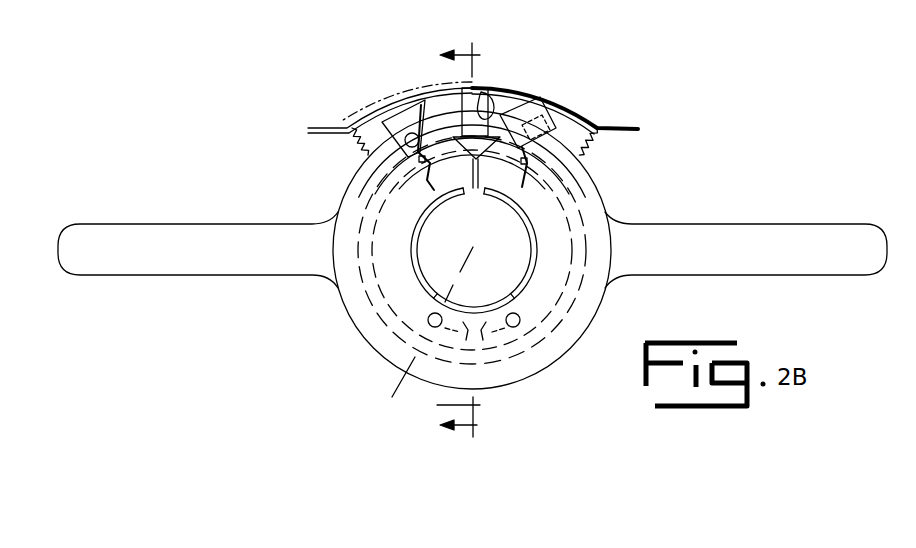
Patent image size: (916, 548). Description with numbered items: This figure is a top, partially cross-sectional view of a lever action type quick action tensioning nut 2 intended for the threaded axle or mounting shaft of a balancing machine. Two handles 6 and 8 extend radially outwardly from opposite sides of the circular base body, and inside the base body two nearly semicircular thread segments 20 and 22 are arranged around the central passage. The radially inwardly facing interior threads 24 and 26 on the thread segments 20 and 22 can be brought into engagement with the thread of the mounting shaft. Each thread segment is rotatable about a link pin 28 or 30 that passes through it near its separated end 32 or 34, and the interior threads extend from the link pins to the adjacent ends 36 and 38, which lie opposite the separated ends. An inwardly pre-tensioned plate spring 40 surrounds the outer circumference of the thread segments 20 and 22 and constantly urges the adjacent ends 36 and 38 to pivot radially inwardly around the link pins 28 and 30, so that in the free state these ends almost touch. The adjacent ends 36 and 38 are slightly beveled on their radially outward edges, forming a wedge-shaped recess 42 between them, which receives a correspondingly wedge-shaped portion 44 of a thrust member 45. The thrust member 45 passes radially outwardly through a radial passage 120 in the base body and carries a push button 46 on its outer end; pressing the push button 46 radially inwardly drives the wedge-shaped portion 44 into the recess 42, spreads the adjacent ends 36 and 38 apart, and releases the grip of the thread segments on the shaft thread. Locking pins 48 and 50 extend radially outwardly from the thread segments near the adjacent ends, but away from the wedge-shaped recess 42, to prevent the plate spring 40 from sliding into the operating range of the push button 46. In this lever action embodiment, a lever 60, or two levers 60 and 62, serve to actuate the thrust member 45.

The quick action tensioning nut 2 is at (322, 95).
The handle 6 is at (162, 233).
The handle 8 is at (783, 233).
The thread segment 20 is at (390, 288).
The thread segment 22 is at (590, 135).
The interior thread 24 is at (418, 225).
The interior thread 26 is at (527, 218).
The link pin 28 is at (429, 322).
The link pin 30 is at (519, 325).
The separated end 32 is at (448, 368).
The separated end 34 is at (528, 378).
The adjacent end 36 is at (425, 160).
The adjacent end 38 is at (593, 173).
The plate spring 40 is at (600, 312).
The wedge-shaped recess 42 is at (530, 120).
The wedge-shaped portion 44 is at (515, 118).
The thrust member 45 is at (490, 110).
The push button 46 is at (462, 86).
The locking pin 48 is at (593, 163).
The locking pin 50 is at (440, 158).
The lever 60 is at (578, 110).
The lever 62 is at (392, 95).
The radial passage 120 is at (485, 140).